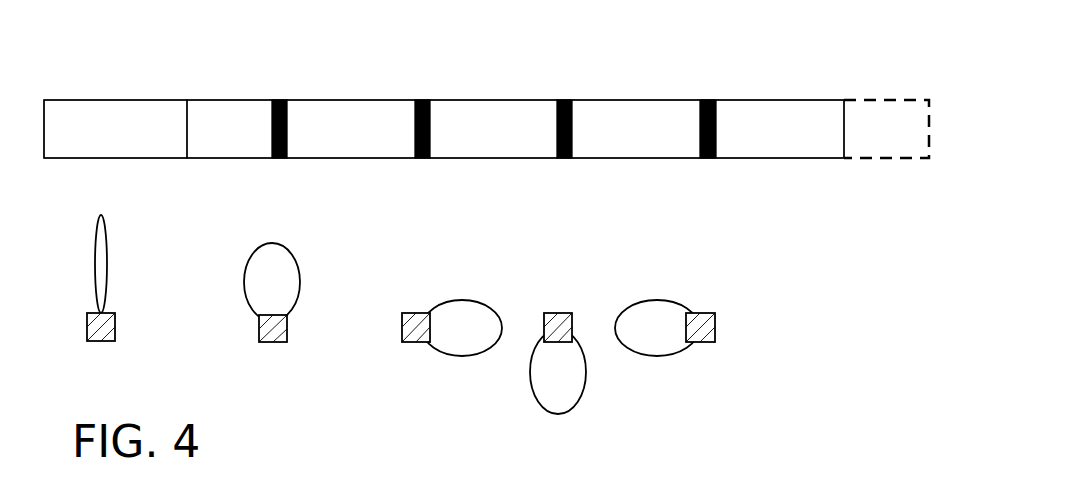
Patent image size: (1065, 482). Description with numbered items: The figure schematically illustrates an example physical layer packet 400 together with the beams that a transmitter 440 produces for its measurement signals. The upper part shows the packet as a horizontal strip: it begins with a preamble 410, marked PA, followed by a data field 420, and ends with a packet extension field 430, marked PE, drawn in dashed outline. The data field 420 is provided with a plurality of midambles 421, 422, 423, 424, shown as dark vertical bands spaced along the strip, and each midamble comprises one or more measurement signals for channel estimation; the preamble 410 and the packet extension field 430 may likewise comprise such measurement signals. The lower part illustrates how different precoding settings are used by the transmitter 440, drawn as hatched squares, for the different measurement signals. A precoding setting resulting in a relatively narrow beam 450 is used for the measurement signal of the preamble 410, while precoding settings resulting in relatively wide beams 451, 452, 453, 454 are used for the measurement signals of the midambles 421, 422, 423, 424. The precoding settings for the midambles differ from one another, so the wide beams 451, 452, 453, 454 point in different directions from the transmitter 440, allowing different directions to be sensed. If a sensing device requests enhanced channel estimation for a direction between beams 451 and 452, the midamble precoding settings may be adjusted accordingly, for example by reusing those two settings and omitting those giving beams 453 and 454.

The physical layer packet 400 is at (845, 78).
The preamble 410 is at (115, 129).
The data field 420 is at (635, 100).
The packet extension field 430 is at (886, 129).
The midamble 421 is at (285, 158).
The midamble 422 is at (430, 158).
The midamble 423 is at (572, 158).
The midamble 424 is at (716, 158).
The transmitter 440 is at (100, 341).
The relatively narrow beam 450 is at (107, 265).
The relatively wide beam 451 is at (300, 275).
The relatively wide beam 452 is at (468, 356).
The relatively wide beam 453 is at (587, 375).
The relatively wide beam 454 is at (657, 300).